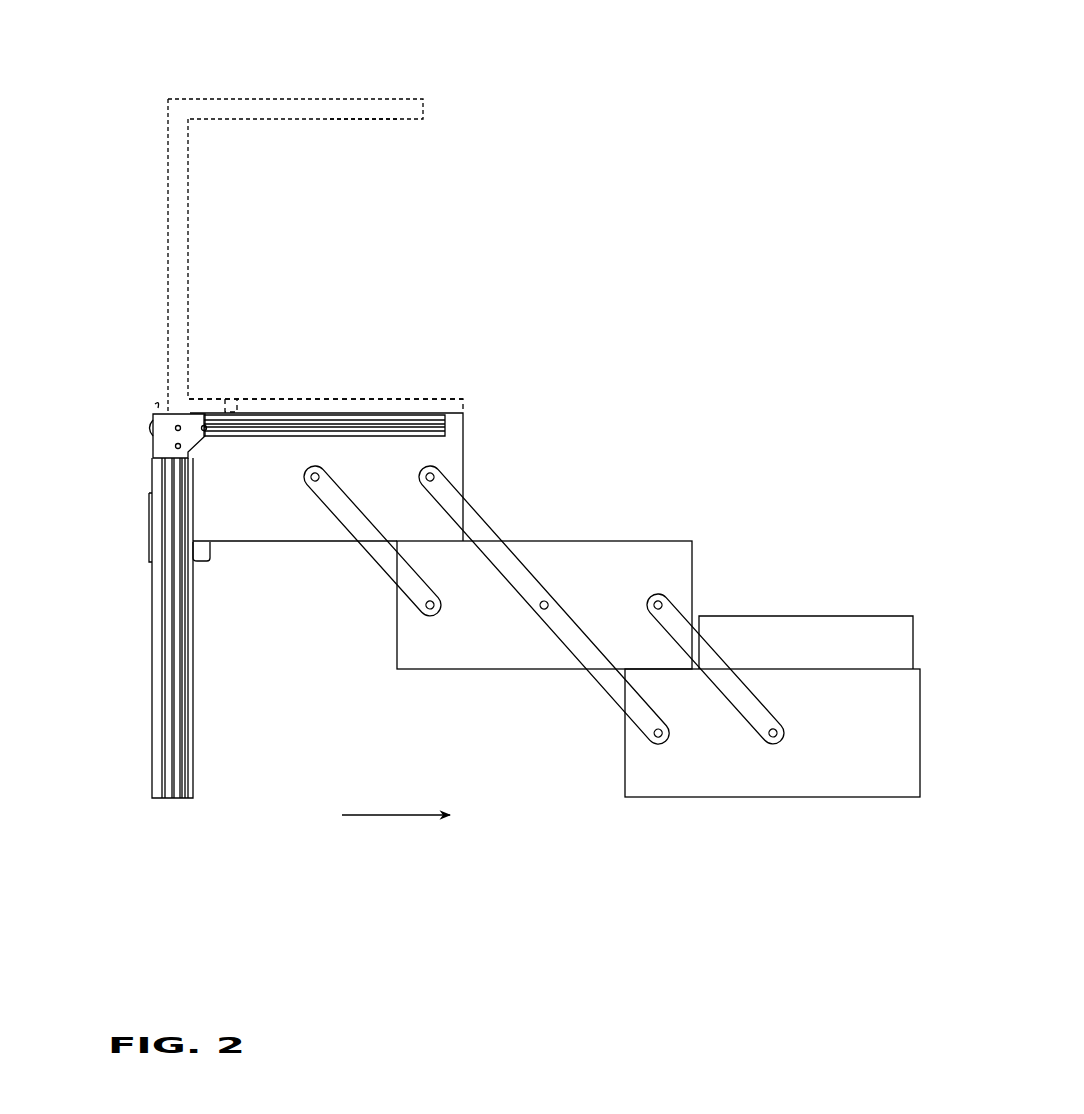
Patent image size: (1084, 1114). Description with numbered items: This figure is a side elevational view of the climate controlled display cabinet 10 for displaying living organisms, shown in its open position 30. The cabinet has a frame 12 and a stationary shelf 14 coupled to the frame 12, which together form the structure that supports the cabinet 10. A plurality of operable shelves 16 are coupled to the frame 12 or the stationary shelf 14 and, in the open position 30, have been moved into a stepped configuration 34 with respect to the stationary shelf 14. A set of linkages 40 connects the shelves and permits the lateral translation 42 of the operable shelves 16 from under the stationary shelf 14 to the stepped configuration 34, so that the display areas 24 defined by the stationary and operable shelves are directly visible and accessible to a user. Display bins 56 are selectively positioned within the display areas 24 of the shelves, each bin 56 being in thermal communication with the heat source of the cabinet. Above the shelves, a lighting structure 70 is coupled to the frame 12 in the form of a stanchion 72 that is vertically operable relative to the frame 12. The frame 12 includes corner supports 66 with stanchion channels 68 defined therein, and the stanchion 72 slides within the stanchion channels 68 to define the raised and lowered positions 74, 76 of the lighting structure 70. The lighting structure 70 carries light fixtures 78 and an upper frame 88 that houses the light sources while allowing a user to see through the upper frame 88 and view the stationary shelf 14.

The climate controlled display cabinet 10 is at (624, 345).
The frame 12 is at (185, 738).
The stationary shelf 14 is at (268, 525).
The operable shelves 16 is at (618, 541).
The display area 24 is at (800, 612).
The open position 30 is at (683, 832).
The stepped configuration 34 is at (680, 515).
The linkages 40 is at (567, 630).
The lateral translation 42 is at (397, 815).
The display bins 56 is at (875, 630).
The corner supports 66 is at (162, 630).
The stanchion channels 68 is at (163, 678).
The lighting structure 70 is at (350, 98).
The stanchion 72 is at (180, 215).
The raised position 74 is at (393, 132).
The lowered position 76 is at (353, 399).
The light fixtures 78 is at (337, 122).
The upper frame 88 is at (242, 100).